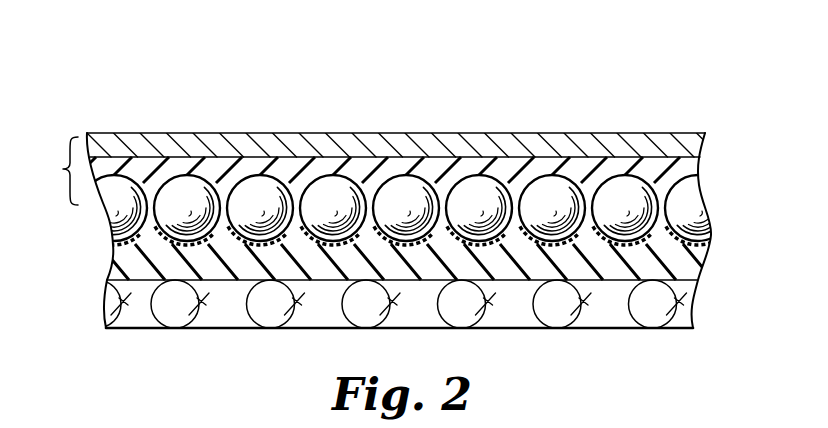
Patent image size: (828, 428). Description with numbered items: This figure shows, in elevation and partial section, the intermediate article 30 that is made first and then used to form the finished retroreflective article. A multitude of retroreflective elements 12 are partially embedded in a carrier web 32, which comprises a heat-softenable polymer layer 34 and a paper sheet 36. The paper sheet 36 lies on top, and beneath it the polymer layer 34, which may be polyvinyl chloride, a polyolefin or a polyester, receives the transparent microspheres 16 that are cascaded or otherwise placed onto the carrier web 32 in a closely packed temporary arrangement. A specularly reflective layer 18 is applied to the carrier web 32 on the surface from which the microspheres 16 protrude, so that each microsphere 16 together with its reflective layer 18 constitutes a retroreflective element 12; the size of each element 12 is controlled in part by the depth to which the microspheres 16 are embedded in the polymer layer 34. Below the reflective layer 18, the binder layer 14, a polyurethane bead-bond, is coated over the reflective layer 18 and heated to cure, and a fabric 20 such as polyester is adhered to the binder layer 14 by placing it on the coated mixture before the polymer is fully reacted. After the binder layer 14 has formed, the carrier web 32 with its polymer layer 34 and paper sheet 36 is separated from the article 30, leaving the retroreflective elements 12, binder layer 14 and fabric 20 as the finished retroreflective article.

The article 30 is at (650, 70).
The paper sheet 36 is at (155, 133).
The carrier web 32 is at (52, 171).
The heat-softenable polymer layer 34 is at (682, 168).
The transparent microsphere 16 is at (323, 190).
The specularly reflective layer 18 is at (432, 242).
The retroreflective element 12 is at (560, 161).
The binder layer 14 is at (123, 265).
The fabric 20 is at (638, 315).